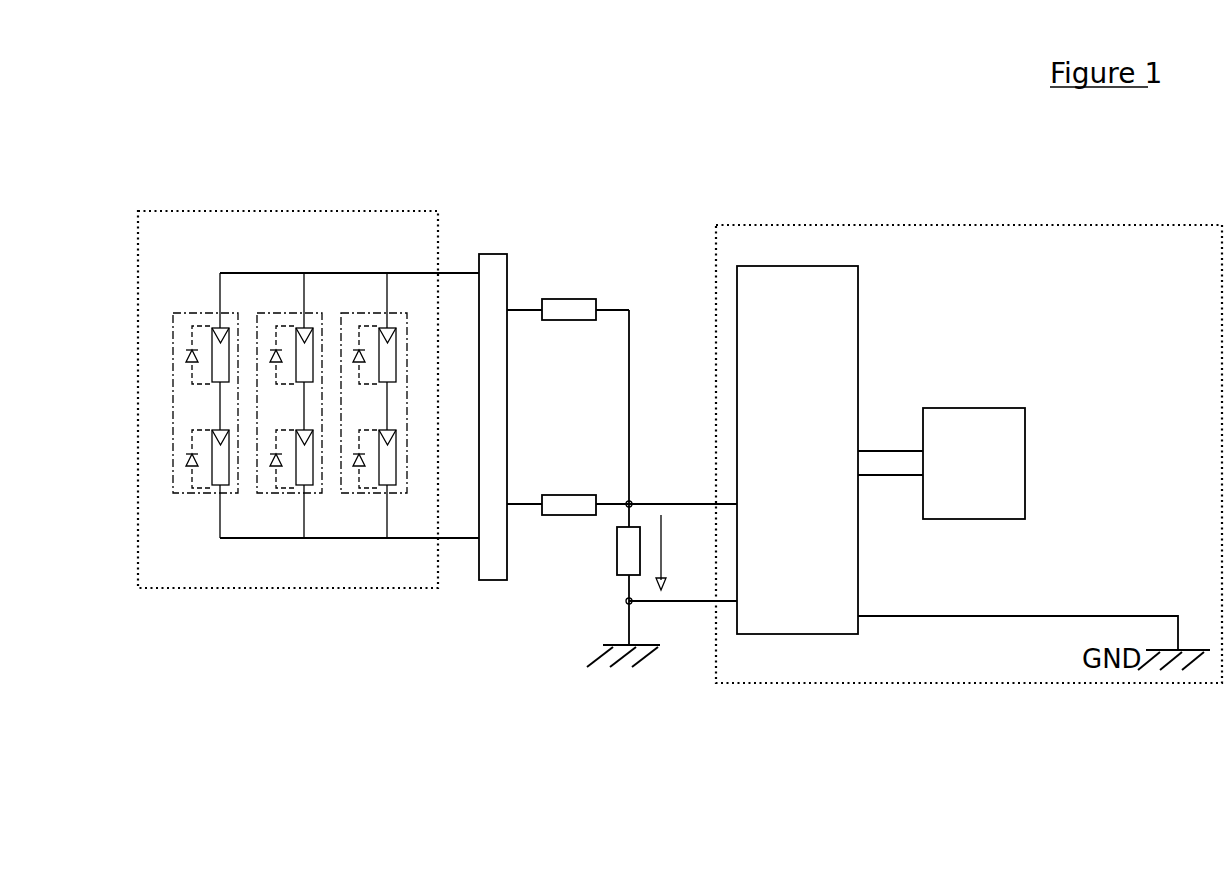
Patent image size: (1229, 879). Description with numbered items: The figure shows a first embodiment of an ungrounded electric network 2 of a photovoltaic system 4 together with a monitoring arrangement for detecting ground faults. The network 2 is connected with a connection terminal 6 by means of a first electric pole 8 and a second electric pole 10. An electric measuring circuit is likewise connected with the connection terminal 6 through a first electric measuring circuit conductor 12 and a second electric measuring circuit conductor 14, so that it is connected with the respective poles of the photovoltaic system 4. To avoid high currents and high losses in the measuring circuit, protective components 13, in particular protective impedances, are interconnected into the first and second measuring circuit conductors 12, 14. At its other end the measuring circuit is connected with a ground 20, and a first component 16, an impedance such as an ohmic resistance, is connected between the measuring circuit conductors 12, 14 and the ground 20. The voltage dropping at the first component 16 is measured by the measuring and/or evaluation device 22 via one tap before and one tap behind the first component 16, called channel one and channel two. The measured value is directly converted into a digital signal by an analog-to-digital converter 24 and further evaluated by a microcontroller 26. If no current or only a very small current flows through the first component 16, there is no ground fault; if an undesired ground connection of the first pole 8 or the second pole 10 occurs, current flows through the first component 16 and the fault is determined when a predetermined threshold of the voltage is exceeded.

The ungrounded electric network 2 is at (288, 343).
The photovoltaic system 4 is at (335, 285).
The connection terminal 6 is at (490, 253).
The first electric pole 8 is at (467, 540).
The second electric pole 10 is at (455, 273).
The first electric measuring circuit conductor 12 is at (518, 503).
The protective component 13 is at (560, 298).
The second electric measuring circuit conductor 14 is at (630, 315).
The first component 16 is at (615, 548).
The ground 20 is at (620, 656).
The measuring and/or evaluation device 22 is at (968, 225).
The analog-to-digital converter 24 is at (817, 267).
The microcontroller 26 is at (1025, 408).